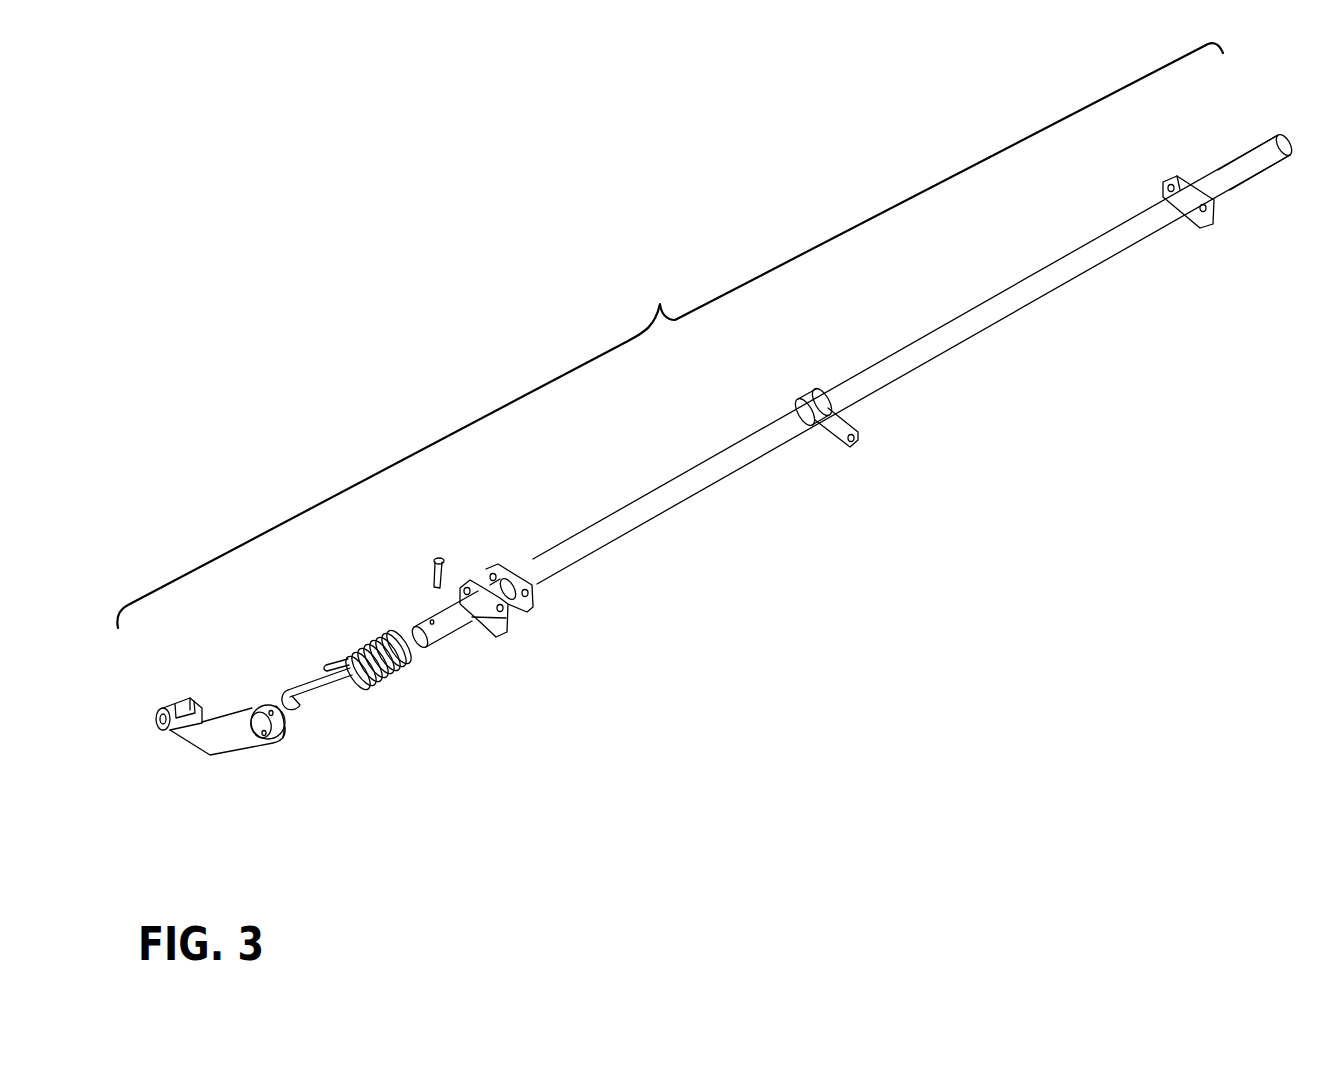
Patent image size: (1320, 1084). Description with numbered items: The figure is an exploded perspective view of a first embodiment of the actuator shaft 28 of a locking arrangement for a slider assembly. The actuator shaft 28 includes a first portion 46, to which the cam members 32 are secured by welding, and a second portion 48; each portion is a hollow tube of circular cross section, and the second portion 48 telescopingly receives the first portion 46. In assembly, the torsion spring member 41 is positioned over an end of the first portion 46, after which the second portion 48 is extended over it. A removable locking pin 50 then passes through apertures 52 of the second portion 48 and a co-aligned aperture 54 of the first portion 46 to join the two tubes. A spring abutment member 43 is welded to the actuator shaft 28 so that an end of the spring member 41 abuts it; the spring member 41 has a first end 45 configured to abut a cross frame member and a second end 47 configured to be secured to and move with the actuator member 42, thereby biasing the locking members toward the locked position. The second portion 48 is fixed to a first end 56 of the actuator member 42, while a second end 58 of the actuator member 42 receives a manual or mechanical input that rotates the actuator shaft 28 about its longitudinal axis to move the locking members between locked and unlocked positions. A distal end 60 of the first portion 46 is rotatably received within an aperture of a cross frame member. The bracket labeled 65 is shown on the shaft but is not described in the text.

The actuator shaft 28 is at (670, 335).
The cam member 32 is at (500, 568).
The torsion spring member 41 is at (382, 670).
The actuator member 42 is at (218, 758).
The spring abutment member 43 is at (476, 581).
The first end 45 is at (326, 668).
The first portion 46 is at (664, 490).
The second end 47 is at (312, 690).
The second portion 48 is at (255, 720).
The removable locking pin 50 is at (430, 570).
The aperture 52 is at (270, 710).
The aperture 54 is at (428, 621).
The first end 56 is at (275, 748).
The second end 58 is at (168, 704).
The distal end 60 is at (1228, 154).
The collar bracket 65 is at (842, 420).